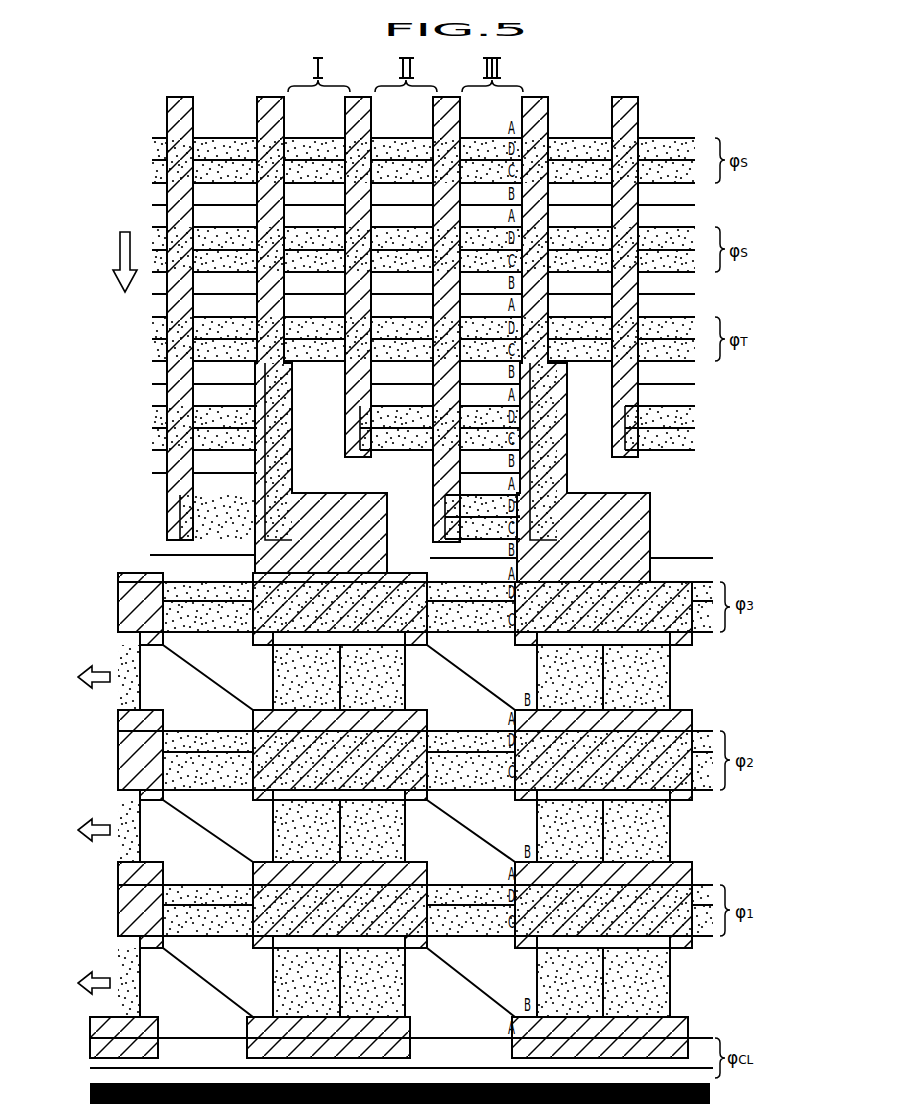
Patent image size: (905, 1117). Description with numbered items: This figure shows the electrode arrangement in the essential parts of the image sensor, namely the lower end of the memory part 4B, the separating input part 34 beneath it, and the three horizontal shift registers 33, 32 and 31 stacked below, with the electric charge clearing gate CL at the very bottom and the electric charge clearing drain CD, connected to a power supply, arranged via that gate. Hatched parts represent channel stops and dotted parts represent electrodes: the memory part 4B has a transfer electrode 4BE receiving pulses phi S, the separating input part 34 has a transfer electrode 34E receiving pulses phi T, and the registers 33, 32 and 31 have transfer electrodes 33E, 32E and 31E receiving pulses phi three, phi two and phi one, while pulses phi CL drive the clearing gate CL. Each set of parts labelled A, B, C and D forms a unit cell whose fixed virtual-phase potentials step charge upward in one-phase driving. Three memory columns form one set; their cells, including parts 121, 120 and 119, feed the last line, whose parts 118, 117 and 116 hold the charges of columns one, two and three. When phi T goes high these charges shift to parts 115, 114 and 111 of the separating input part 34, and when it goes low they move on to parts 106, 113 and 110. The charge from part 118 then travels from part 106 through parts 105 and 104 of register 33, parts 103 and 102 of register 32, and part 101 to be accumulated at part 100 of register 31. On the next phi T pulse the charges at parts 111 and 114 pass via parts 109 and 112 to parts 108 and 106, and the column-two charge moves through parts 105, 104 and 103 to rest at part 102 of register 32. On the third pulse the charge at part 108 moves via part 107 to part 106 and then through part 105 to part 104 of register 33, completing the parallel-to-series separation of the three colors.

The part of horizontal register 31 100 is at (461, 1027).
The part of horizontal register 31 101 is at (471, 920).
The part of horizontal register 32 102 is at (471, 874).
The part of horizontal register 32 103 is at (471, 771).
The part of horizontal register 33 104 is at (471, 720).
The part of horizontal register 33 105 is at (471, 616).
The part of separating input part 106 is at (472, 570).
The part of separating input part 107 is at (482, 528).
The part of separating input part 108 is at (490, 484).
The part of separating input part 109 is at (490, 439).
The part of separating input part 110 is at (490, 395).
The part of separating input part 111 is at (491, 350).
The part of separating input part 112 is at (396, 439).
The part of separating input part 113 is at (402, 395).
The part of separating input part 114 is at (402, 350).
The part of separating input part 115 is at (318, 350).
The part of memory part last line 116 is at (491, 305).
The part of memory part last line 117 is at (402, 305).
The part of memory part last line 118 is at (314, 305).
The charge transfer cell 119 is at (491, 261).
The charge transfer cell 120 is at (402, 261).
The charge transfer cell 121 is at (314, 261).
The memory part 4B is at (760, 97).
The transfer electrode 4BE is at (688, 227).
The separating input part 34 is at (760, 578).
The transfer electrode 34E is at (688, 370).
The horizontal shift register 33 is at (760, 573).
The transfer electrode 33E is at (660, 677).
The horizontal shift register 32 is at (760, 712).
The transfer electrode 32E is at (660, 829).
The horizontal shift register 31 is at (753, 865).
The transfer electrode 31E is at (658, 984).
The electric charge clearing gate CL is at (755, 1037).
The electric charge clearing drain CD is at (712, 1094).